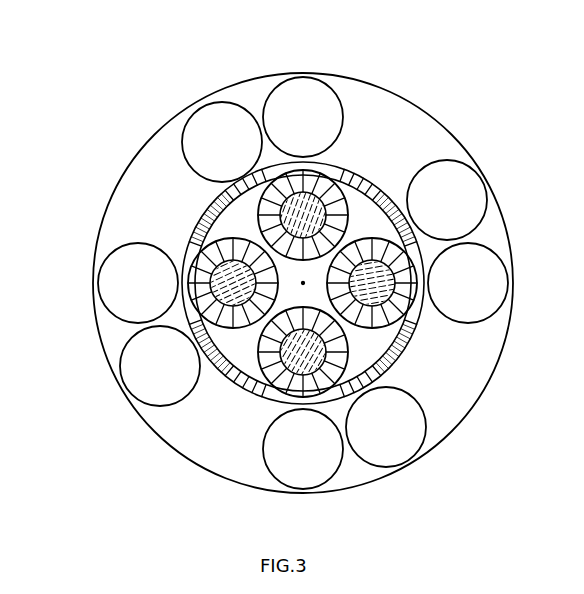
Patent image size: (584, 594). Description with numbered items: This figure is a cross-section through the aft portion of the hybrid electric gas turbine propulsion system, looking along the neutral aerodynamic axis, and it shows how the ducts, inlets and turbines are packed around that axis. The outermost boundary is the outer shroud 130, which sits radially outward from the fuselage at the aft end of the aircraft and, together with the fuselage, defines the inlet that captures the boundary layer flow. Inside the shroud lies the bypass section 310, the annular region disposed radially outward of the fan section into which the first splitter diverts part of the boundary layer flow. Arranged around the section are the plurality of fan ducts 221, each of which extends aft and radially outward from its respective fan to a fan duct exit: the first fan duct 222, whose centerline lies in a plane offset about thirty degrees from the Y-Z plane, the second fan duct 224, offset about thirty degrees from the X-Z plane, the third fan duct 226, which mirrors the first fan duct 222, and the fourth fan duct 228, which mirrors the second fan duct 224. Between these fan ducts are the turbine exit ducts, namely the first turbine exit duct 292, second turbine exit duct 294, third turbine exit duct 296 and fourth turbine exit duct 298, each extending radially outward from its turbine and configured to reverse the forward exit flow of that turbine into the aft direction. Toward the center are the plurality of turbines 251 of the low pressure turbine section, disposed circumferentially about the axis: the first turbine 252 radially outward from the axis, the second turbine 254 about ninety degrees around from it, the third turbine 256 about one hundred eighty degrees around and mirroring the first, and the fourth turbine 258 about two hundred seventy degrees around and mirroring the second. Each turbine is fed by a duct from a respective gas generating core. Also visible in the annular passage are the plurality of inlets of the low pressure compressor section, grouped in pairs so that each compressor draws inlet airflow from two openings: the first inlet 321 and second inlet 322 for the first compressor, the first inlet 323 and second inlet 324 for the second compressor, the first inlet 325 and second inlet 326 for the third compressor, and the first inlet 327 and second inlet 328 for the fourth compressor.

The outer shroud 130 is at (358, 78).
The bypass section 310 is at (402, 160).
The plurality of fan ducts 221 is at (218, 108).
The first fan duct 222 is at (205, 153).
The second fan duct 224 is at (430, 211).
The third fan duct 226 is at (369, 438).
The fourth fan duct 228 is at (143, 377).
The first turbine exit duct 292 is at (286, 128).
The second turbine exit duct 294 is at (451, 294).
The third turbine exit duct 296 is at (286, 460).
The fourth turbine exit duct 298 is at (121, 294).
The plurality of turbines 251 is at (332, 210).
The first turbine 252 is at (288, 198).
The second turbine 254 is at (396, 298).
The third turbine 256 is at (335, 362).
The fourth turbine 258 is at (215, 265).
The first inlet 321 is at (228, 182).
The second inlet 322 is at (347, 172).
The first inlet 323 is at (416, 240).
The second inlet 324 is at (405, 352).
The first inlet 325 is at (375, 378).
The second inlet 326 is at (231, 383).
The first inlet 327 is at (205, 370).
The second inlet 328 is at (196, 224).